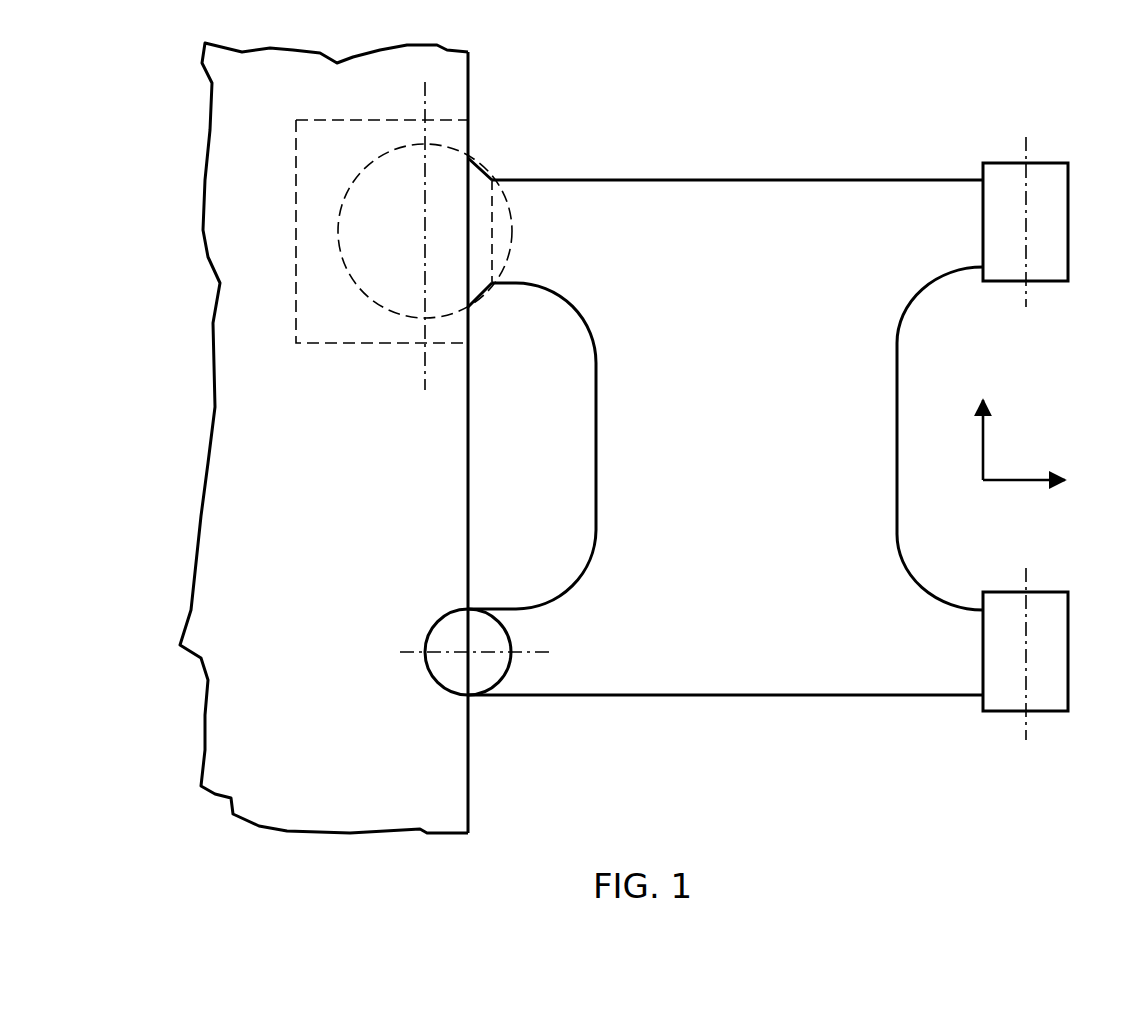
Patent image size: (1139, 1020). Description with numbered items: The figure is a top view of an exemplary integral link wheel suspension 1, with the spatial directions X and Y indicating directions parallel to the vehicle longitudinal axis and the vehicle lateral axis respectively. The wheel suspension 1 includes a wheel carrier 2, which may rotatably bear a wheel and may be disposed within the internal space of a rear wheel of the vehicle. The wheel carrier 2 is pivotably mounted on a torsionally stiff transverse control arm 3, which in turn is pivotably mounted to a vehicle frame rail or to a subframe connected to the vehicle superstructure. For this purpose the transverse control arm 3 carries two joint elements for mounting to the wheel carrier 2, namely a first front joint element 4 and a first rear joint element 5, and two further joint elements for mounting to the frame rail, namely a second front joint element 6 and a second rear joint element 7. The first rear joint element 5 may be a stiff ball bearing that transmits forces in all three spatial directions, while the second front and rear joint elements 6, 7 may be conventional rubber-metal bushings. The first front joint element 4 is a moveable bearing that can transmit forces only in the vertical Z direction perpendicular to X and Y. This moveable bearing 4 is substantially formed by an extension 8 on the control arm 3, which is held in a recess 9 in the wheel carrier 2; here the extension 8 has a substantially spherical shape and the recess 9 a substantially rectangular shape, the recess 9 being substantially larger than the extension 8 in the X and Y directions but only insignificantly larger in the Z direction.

The wheel suspension 1 is at (822, 100).
The wheel carrier 2 is at (221, 730).
The transverse control arm 3 is at (752, 685).
The first front joint element 4 is at (275, 280).
The first rear joint element 5 is at (484, 680).
The second front joint element 6 is at (1053, 218).
The second rear joint element 7 is at (1053, 636).
The extension 8 is at (446, 268).
The recess 9 is at (455, 138).